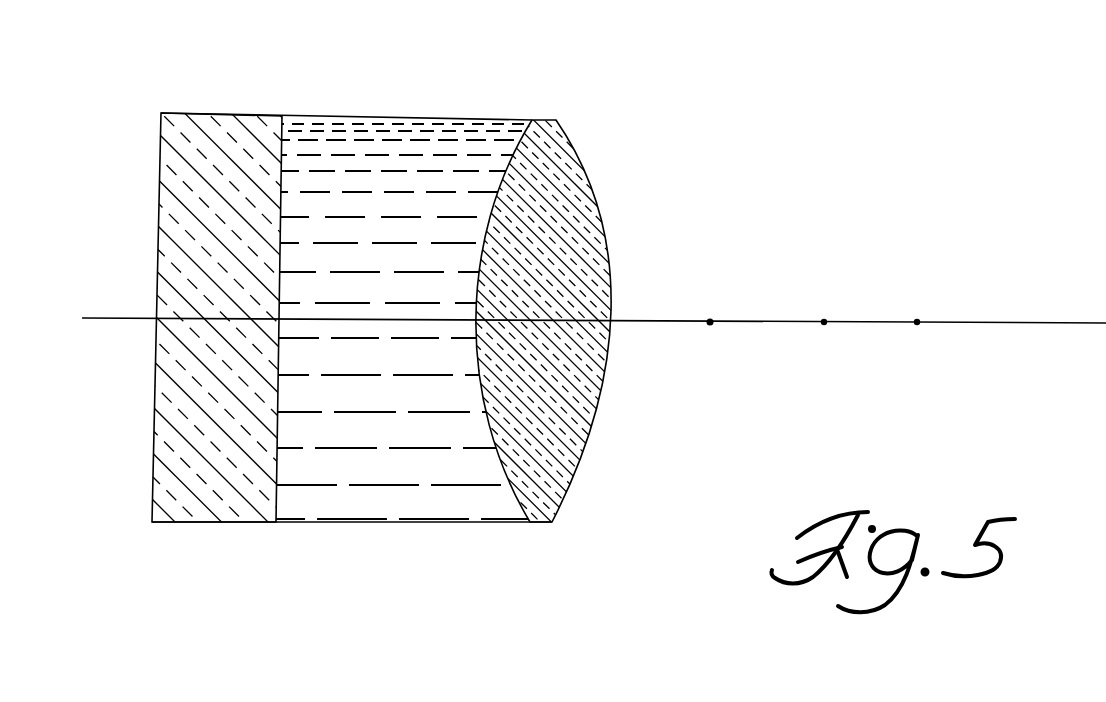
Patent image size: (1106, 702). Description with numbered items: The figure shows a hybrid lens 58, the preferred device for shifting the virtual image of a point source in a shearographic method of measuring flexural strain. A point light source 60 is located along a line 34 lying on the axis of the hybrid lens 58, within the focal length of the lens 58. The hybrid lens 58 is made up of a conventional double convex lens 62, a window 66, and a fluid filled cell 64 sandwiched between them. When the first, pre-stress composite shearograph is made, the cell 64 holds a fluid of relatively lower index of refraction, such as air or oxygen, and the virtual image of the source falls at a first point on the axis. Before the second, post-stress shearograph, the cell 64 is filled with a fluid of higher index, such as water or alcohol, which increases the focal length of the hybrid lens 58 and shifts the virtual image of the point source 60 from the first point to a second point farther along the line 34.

The line 34 is at (1002, 322).
The hybrid lens 58 is at (452, 535).
The point light source 60 is at (710, 324).
The double convex lens 62 is at (550, 137).
The fluid filled cell 64 is at (407, 130).
The window 66 is at (162, 112).